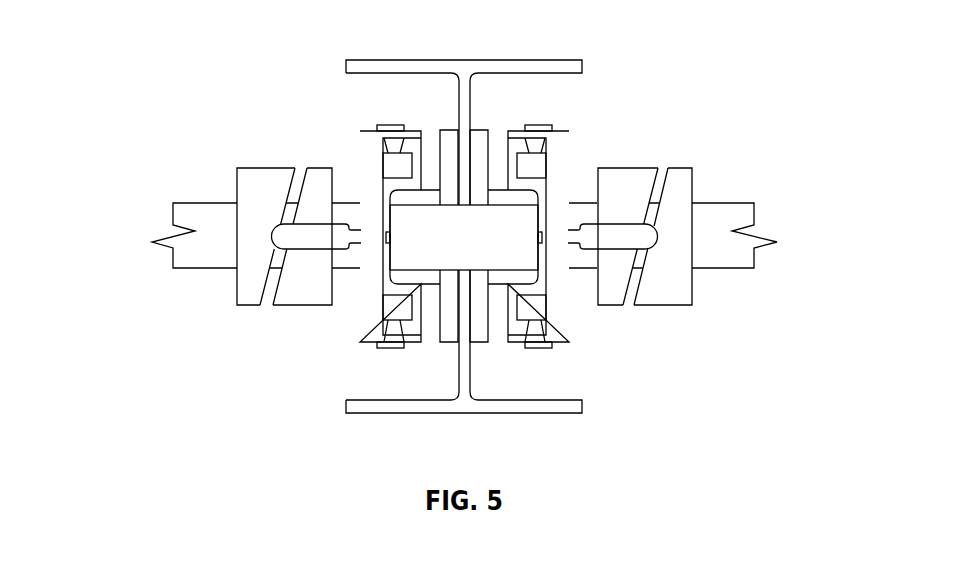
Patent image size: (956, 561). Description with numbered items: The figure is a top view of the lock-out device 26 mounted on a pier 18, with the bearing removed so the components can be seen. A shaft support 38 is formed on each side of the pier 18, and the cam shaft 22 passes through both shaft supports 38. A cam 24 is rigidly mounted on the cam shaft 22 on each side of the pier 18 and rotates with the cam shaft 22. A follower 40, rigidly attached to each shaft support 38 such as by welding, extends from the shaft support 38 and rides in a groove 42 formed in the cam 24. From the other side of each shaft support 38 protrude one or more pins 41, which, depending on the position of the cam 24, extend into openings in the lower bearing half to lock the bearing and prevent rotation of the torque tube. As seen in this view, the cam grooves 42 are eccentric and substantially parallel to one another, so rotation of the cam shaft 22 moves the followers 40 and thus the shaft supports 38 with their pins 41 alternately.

The pier 18 is at (465, 60).
The cam shaft 22 is at (205, 203).
The cam 24 is at (260, 168).
The lock-out device 26 is at (620, 86).
The shaft support 38 is at (370, 323).
The follower 40 is at (313, 240).
The pin 41 is at (403, 158).
The groove 42 is at (302, 170).